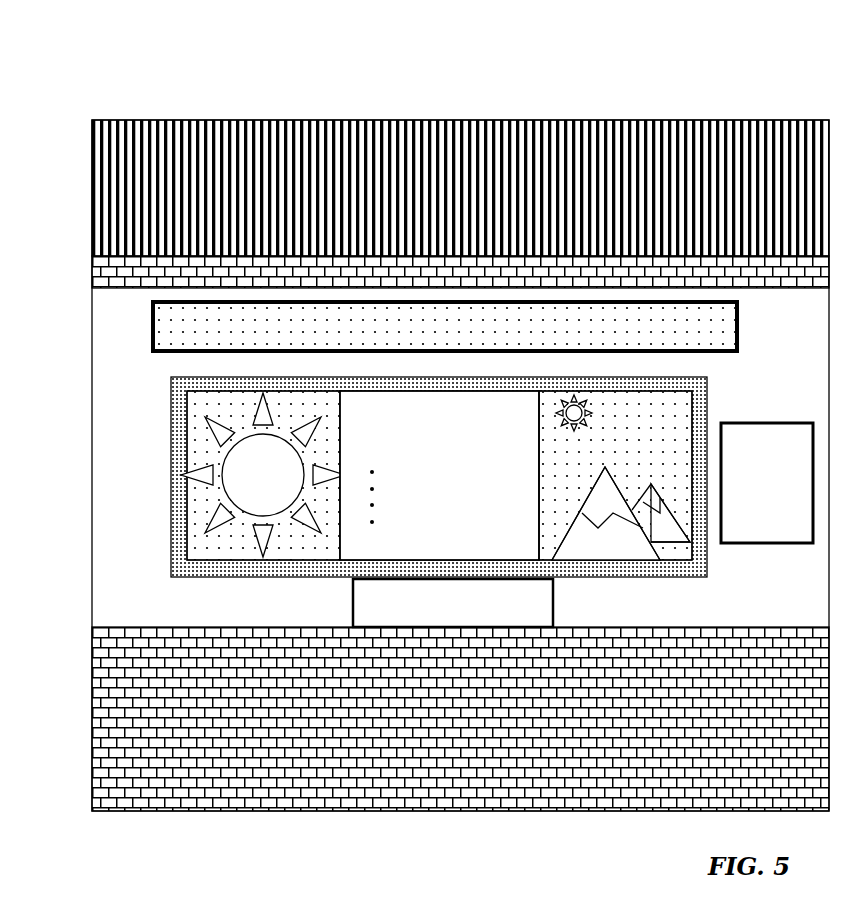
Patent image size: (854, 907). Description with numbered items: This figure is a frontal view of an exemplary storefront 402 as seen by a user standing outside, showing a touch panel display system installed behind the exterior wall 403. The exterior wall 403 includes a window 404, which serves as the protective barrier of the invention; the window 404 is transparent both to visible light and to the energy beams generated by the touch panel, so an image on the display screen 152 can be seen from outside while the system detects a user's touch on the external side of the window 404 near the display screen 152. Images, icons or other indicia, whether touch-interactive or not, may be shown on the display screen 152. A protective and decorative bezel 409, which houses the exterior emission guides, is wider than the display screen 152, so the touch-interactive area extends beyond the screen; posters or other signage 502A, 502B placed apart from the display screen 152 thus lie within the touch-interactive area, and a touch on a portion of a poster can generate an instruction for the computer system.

The storefront 402 is at (88, 102).
The window 404 is at (92, 410).
The exterior wall 403 is at (92, 765).
The protective/decorative bezel 409 is at (171, 377).
The poster or signage 502A is at (276, 553).
The poster or signage 502B is at (677, 455).
The display screen 152 is at (505, 533).